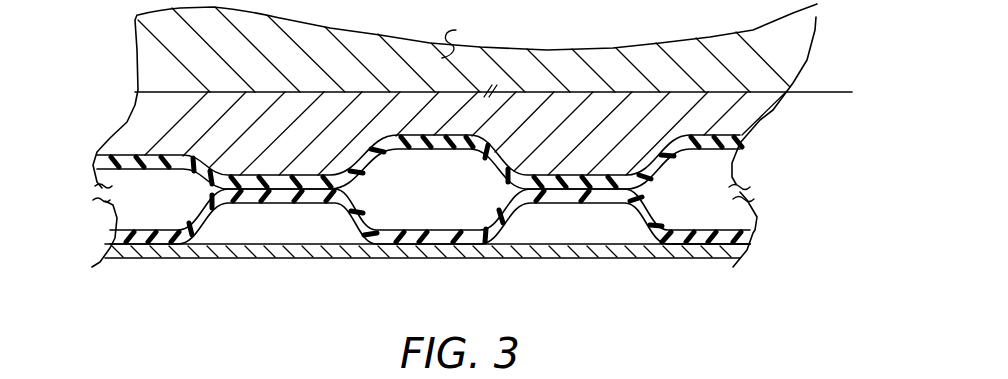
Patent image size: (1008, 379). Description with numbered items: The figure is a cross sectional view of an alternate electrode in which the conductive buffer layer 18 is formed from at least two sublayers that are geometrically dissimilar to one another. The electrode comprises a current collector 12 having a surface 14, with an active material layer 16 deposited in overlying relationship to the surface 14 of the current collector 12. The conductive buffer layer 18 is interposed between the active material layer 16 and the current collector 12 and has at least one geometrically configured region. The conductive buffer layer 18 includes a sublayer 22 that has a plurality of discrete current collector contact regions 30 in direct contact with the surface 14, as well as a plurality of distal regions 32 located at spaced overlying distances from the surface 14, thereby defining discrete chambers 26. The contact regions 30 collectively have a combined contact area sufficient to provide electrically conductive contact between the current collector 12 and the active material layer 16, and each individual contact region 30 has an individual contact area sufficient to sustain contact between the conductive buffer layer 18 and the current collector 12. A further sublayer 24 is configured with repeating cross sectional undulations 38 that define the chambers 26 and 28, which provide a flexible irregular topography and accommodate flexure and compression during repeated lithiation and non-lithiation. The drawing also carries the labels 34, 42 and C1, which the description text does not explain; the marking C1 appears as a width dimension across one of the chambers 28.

The current collector 12 is at (427, 267).
The surface of the current collector 14 is at (227, 236).
The active material layer 16 is at (143, 123).
The conductive buffer layer 18 is at (434, 200).
The sublayer 22 is at (123, 237).
The sublayer 24 is at (97, 163).
The discrete chambers 26 is at (292, 237).
The chambers 28 is at (157, 213).
The discrete current collector contact regions 30 is at (694, 247).
The distal regions 32 is at (600, 198).
The upper sheet 34 is at (543, 180).
The repeating cross sectional undulations 38 is at (428, 134).
The edge of body 42 is at (806, 41).
The cell width C1 is at (382, 230).